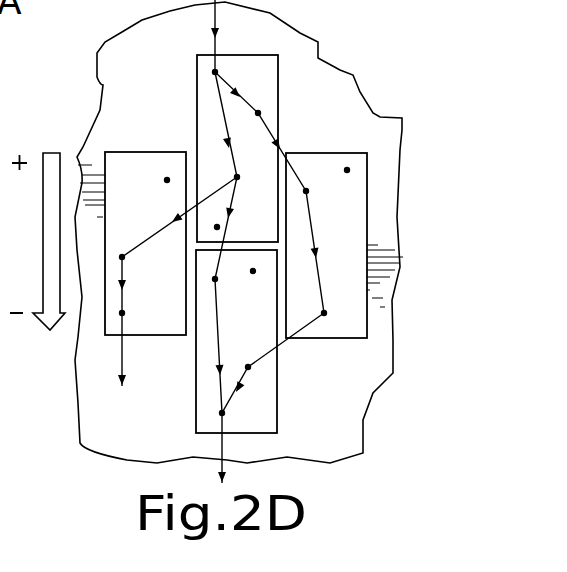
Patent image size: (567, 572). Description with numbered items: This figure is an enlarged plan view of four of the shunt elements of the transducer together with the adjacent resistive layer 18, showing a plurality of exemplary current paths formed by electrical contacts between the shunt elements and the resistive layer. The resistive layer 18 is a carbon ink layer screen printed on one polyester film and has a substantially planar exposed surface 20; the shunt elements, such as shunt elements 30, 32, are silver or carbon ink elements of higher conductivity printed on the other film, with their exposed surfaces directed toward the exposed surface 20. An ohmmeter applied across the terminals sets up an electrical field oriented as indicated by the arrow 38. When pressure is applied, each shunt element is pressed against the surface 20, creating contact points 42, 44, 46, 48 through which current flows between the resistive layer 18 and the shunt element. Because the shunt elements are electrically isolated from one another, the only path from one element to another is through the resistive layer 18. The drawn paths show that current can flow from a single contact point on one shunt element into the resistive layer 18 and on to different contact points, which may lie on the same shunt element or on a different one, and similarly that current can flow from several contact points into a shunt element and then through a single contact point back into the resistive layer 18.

The resistive layer 18 is at (352, 128).
The exposed surface 20 is at (133, 86).
The shunt element 30 is at (138, 163).
The shunt element 32 is at (267, 70).
The arrow 38 is at (40, 240).
The contact point 42 is at (212, 72).
The contact point 44 is at (262, 112).
The contact point 46 is at (237, 177).
The contact point 48 is at (215, 228).